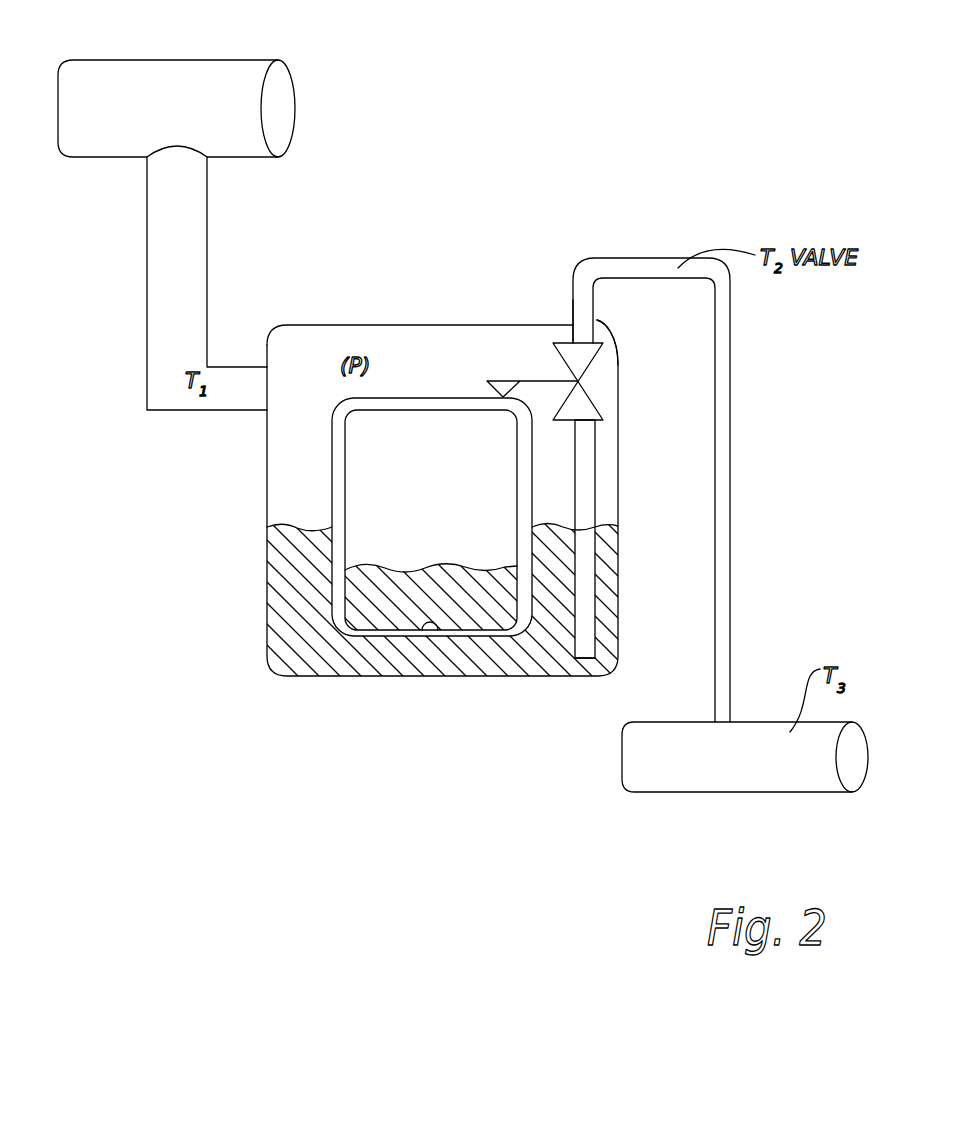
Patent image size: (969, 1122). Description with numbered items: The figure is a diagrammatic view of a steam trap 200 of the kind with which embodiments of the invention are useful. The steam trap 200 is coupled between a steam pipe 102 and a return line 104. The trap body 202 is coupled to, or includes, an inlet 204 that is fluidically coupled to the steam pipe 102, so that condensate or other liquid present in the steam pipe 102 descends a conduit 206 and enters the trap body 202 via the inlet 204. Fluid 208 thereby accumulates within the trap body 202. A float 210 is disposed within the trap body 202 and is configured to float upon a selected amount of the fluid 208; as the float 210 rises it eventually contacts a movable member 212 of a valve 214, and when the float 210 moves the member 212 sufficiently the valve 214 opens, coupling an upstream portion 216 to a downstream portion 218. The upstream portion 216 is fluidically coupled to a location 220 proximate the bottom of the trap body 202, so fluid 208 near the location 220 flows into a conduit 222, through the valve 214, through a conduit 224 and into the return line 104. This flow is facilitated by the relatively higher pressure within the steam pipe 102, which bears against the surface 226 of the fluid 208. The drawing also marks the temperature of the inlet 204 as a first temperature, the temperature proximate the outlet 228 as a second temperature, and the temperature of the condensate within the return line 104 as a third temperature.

The steam pipe 102 is at (182, 60).
The return line 104 is at (678, 782).
The steam trap 200 is at (333, 310).
The trap body 202 is at (267, 515).
The inlet 204 is at (268, 388).
The conduit 206 is at (147, 270).
The fluid 208 is at (362, 663).
The float 210 is at (332, 458).
The movable member 212 is at (537, 381).
The valve 214 is at (612, 362).
The upstream portion 216 is at (585, 423).
The downstream portion 218 is at (583, 343).
The location 220 is at (583, 648).
The conduit 222 is at (575, 503).
The conduit 224 is at (663, 258).
The surface 226 is at (300, 528).
The outlet 228 is at (573, 313).